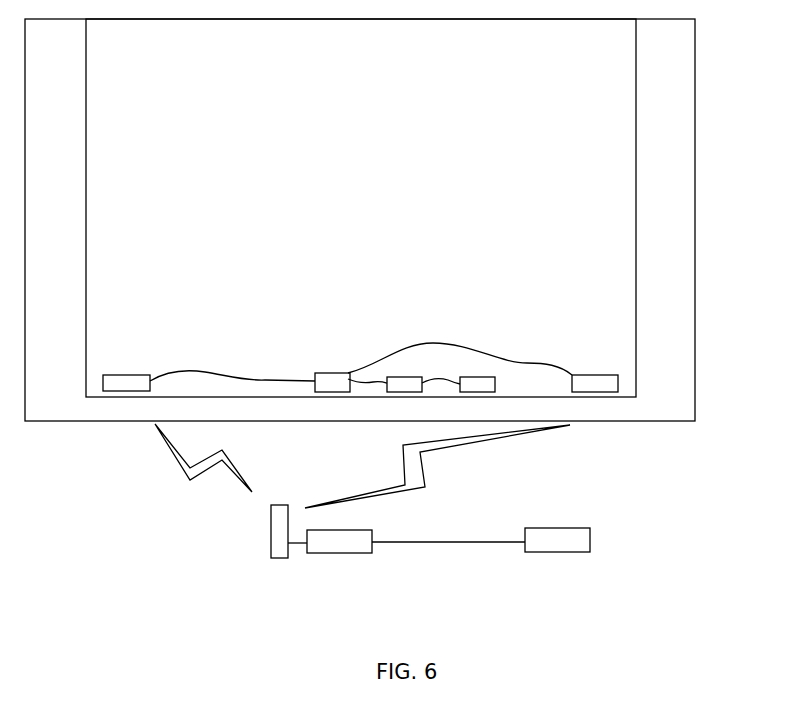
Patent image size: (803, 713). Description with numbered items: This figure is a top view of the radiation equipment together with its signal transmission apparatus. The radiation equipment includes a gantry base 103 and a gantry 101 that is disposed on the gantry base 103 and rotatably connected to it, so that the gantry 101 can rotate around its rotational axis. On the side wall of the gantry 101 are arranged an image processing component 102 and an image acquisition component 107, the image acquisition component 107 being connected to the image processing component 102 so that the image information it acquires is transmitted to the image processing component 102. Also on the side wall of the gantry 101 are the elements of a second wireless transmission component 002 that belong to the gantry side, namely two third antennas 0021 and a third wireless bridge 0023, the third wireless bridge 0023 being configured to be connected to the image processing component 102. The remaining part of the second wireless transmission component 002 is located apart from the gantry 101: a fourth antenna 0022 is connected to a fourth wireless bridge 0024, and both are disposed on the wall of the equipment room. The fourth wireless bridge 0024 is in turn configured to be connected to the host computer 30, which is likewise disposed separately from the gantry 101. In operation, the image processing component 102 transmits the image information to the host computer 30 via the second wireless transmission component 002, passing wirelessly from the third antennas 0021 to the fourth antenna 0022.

The gantry 101 is at (638, 220).
The gantry base 103 is at (697, 295).
The second wireless transmission component 002 is at (592, 308).
The third antenna 0021 is at (131, 374).
The third wireless bridge 0023 is at (332, 372).
The image processing component 102 is at (405, 376).
The image acquisition component 107 is at (474, 376).
The fourth antenna 0022 is at (270, 532).
The fourth wireless bridge 0024 is at (322, 555).
The host computer 30 is at (592, 537).